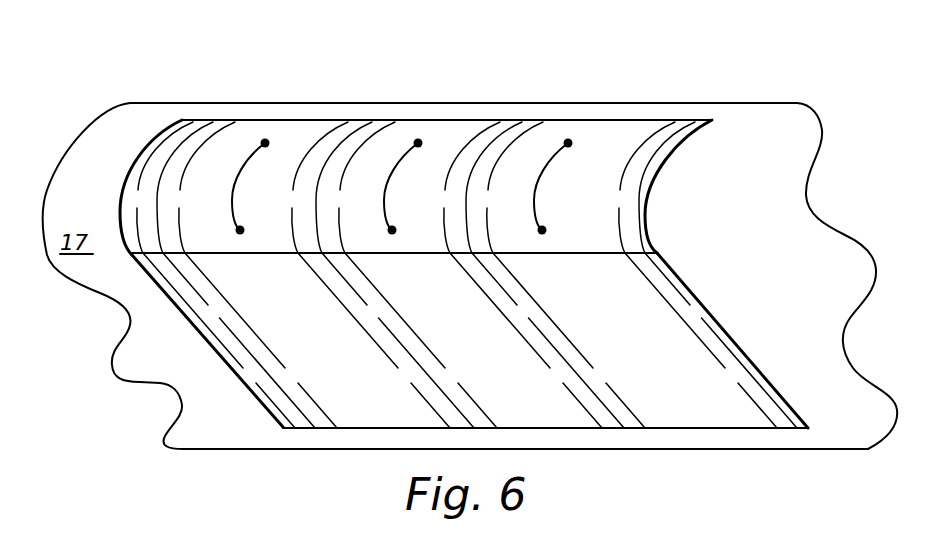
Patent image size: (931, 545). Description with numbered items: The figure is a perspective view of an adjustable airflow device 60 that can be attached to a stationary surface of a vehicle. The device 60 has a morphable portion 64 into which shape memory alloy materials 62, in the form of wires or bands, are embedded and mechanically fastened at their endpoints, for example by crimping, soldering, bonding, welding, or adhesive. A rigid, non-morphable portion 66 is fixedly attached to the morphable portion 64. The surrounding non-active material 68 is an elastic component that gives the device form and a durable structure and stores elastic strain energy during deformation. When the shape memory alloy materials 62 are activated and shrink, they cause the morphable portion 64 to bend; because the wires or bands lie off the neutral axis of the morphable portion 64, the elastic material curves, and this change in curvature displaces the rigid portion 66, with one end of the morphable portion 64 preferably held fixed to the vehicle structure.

The adjustable airflow device 60 is at (172, 415).
The shape memory alloy materials 62 is at (536, 183).
The morphable portion 64 is at (667, 162).
The rigid non-morphable portion 66 is at (730, 336).
The non-active material 68 is at (217, 131).